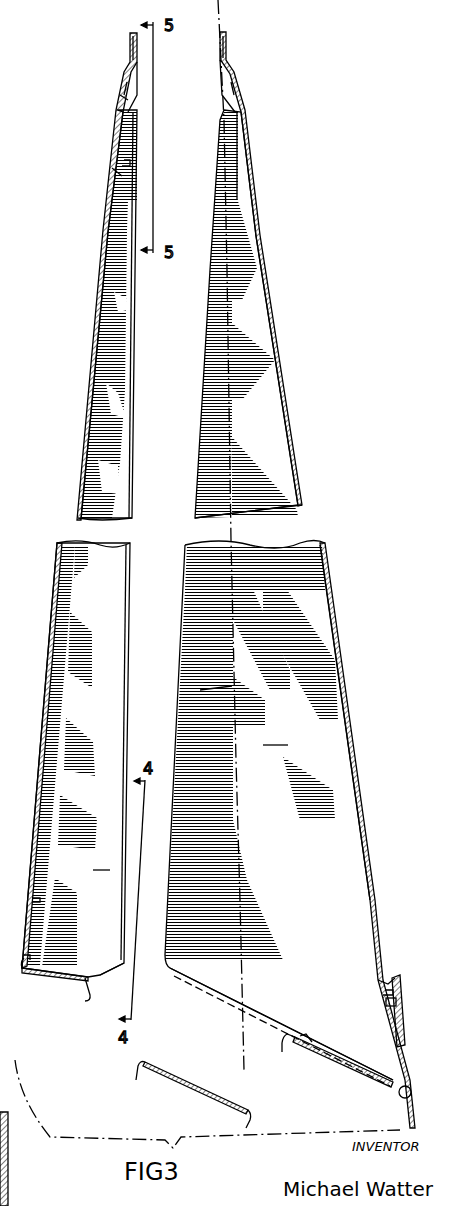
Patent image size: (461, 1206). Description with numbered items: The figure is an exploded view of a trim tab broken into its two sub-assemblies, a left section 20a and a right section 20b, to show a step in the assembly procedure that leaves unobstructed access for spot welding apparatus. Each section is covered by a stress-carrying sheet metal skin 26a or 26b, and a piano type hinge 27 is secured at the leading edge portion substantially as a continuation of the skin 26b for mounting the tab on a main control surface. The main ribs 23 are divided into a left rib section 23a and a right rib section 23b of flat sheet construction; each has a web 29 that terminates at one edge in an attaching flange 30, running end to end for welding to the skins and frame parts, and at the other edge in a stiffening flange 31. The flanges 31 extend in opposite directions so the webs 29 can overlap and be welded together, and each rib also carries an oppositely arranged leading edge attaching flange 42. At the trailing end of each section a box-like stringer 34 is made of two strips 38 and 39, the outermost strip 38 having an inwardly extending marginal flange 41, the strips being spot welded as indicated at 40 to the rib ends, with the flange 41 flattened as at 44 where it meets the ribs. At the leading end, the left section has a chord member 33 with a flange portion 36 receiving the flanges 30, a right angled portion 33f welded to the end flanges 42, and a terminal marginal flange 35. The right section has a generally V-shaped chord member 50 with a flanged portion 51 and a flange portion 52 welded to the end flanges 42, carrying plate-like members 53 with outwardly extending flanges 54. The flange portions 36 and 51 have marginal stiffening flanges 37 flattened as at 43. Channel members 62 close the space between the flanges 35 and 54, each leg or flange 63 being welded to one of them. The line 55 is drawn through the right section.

The left section 20a is at (82, 450).
The right section 20b is at (297, 417).
The main rib 23 is at (185, 639).
The left rib section 23a is at (76, 760).
The right rib section 23b is at (290, 835).
The skin 26a is at (78, 512).
The skin 26b is at (305, 480).
The piano type hinge 27 is at (401, 1099).
The web 29 is at (101, 864).
The attaching flange 30 is at (262, 238).
The stiffening flange 31 is at (190, 549).
The chord member 33 is at (62, 979).
The right angled portion 33f is at (68, 981).
The stringer 34 is at (120, 96).
The marginal flange 35 is at (84, 1001).
The flange portion 36 is at (15, 973).
The marginal stiffening flange 37 is at (40, 900).
The outermost strip 38 is at (127, 83).
The strip 39 is at (139, 96).
The spot weld 40 is at (130, 44).
The marginal flange 41 is at (130, 164).
The attaching flange 42 is at (78, 972).
The flattened portion 43 is at (386, 983).
The flattened portion 44 is at (118, 176).
The chord member 50 is at (396, 1055).
The flanged portion 51 is at (388, 1003).
The flange portion 52 is at (335, 1050).
The plate-like member 53 is at (333, 1058).
The outwardly extending flange 54 is at (283, 1054).
The centerline 55 is at (200, 690).
The channel member 62 is at (208, 1090).
The leg or flange 63 is at (245, 1120).